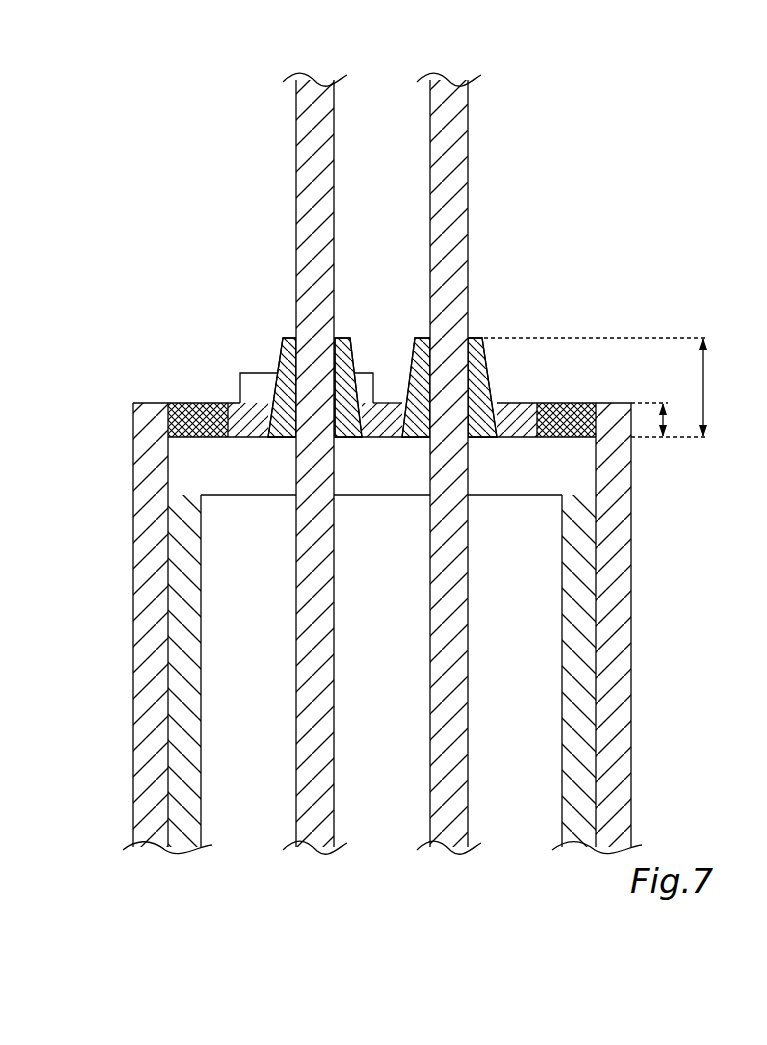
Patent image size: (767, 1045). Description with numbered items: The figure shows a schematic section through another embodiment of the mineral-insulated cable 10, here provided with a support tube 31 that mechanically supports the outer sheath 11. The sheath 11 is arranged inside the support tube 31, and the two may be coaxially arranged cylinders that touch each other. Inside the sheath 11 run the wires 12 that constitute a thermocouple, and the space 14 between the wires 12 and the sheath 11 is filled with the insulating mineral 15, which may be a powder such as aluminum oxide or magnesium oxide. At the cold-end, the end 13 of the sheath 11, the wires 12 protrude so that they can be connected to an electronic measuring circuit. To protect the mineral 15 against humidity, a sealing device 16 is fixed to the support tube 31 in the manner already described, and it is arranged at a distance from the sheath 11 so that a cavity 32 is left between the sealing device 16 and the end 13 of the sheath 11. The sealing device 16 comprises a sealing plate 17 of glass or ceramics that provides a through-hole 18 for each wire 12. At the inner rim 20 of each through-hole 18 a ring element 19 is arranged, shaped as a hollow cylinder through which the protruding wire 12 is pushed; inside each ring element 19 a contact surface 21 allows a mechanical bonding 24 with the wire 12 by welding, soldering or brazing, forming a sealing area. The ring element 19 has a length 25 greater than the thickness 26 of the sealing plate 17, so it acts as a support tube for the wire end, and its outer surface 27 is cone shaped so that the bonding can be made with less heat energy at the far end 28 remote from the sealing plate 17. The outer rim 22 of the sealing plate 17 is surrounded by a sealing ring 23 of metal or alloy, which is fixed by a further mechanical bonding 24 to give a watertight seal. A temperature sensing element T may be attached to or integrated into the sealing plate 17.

The mineral-insulated cable 10 is at (392, 628).
The outer sheath 11 is at (625, 667).
The wires 12 is at (300, 563).
The end of sheath 13 is at (178, 490).
The space 14 is at (218, 737).
The insulating mineral 15 is at (235, 720).
The sealing device 16 is at (572, 228).
The sealing plate 17 is at (530, 398).
The through-hole 18 is at (350, 443).
The ring element 19 is at (275, 362).
The inner rim 20 is at (351, 402).
The contact surface 21 is at (340, 347).
The outer rim 22 is at (557, 412).
The sealing ring 23 is at (600, 405).
The mechanical bonding 24 is at (167, 428).
The length 25 is at (704, 388).
The thickness 26 is at (663, 422).
The outer surface 27 is at (493, 387).
The far end 28 is at (288, 328).
The support tube 31 is at (137, 614).
The cavity 32 is at (205, 460).
The temperature sensing element T is at (238, 388).